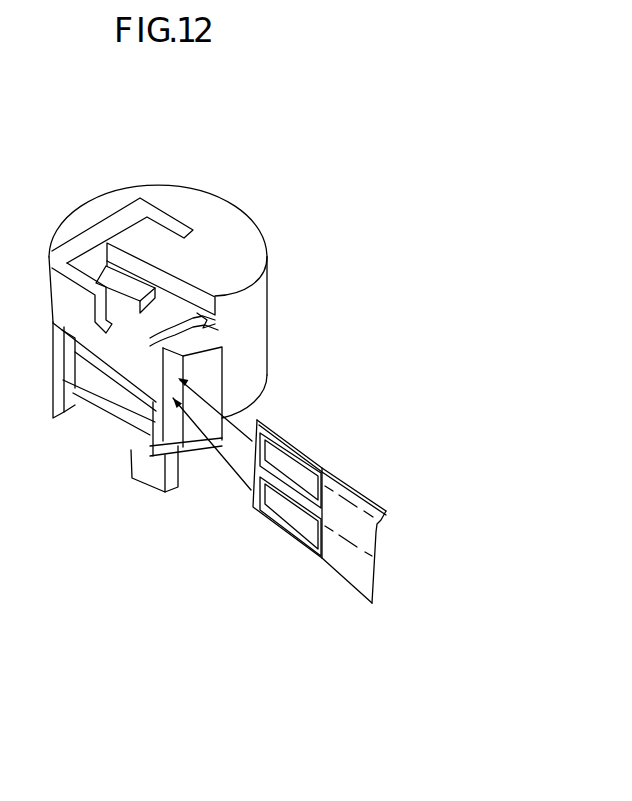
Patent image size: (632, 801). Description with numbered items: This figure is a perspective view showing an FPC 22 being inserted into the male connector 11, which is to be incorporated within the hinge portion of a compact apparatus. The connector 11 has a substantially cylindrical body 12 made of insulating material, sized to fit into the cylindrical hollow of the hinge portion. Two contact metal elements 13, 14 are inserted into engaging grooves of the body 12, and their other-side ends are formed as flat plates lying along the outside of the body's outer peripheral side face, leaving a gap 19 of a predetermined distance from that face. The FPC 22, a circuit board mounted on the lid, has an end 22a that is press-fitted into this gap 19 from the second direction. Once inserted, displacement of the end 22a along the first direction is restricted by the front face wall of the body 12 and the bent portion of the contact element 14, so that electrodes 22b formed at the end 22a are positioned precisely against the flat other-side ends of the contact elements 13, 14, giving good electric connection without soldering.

The male connector 11 is at (260, 158).
The body 12 is at (264, 281).
The contact metal element 13 is at (90, 385).
The contact metal element 14 is at (105, 262).
The gap 19 is at (176, 421).
The FPC 22 is at (343, 585).
The end 22a is at (314, 436).
The electrodes 22b is at (295, 475).